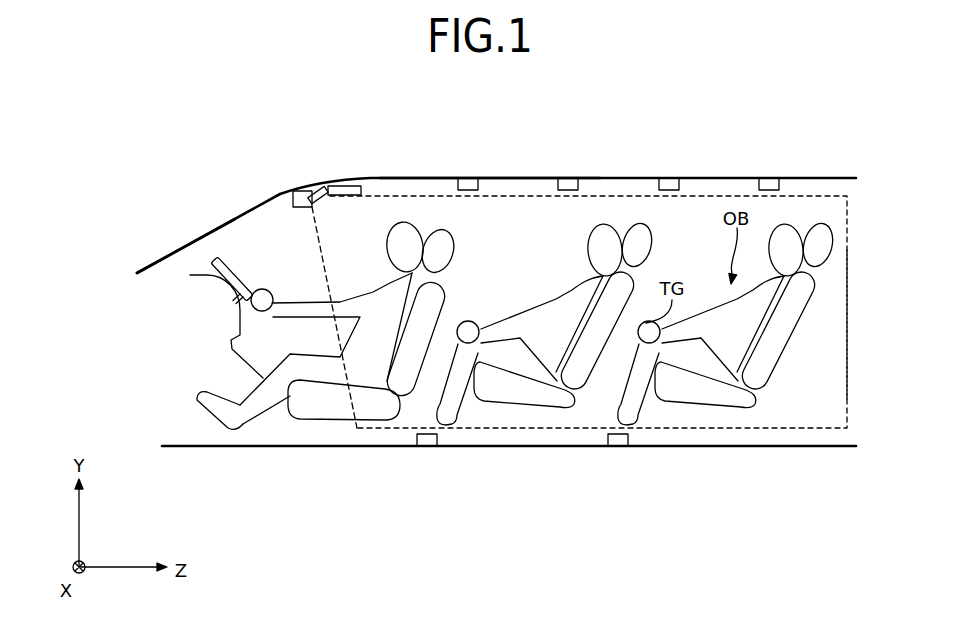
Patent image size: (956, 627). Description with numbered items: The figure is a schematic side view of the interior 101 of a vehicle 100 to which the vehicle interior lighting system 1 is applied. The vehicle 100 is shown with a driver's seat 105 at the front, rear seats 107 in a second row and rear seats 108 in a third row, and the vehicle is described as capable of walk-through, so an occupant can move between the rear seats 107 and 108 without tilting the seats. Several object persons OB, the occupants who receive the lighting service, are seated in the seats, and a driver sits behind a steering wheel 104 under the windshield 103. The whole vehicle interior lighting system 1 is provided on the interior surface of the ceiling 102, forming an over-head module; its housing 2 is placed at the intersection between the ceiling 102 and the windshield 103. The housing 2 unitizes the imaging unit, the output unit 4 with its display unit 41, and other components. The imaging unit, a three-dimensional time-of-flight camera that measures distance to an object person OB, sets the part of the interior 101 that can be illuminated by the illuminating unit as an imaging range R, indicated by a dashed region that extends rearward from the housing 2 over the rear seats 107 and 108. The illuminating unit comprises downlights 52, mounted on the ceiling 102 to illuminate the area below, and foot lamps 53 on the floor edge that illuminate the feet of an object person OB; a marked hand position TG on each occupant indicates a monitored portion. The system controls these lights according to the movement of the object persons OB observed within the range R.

The vehicle interior lighting system 1 is at (343, 272).
The housing 2 is at (303, 208).
The output unit 4 is at (323, 205).
The display unit 41 is at (345, 228).
The downlights 52 is at (566, 187).
The foot lamps 53 is at (430, 447).
The vehicle 100 is at (622, 158).
The interior 101 is at (808, 366).
The ceiling 102 is at (491, 190).
The windshield 103 is at (206, 228).
The steering wheel 104 is at (205, 253).
The driver's seat 105 is at (323, 427).
The rear seats in a second row 107 is at (520, 413).
The rear seats in a third row 108 is at (697, 413).
The object person OB is at (410, 212).
The target (hand) TG is at (466, 323).
The imaging range R is at (847, 303).